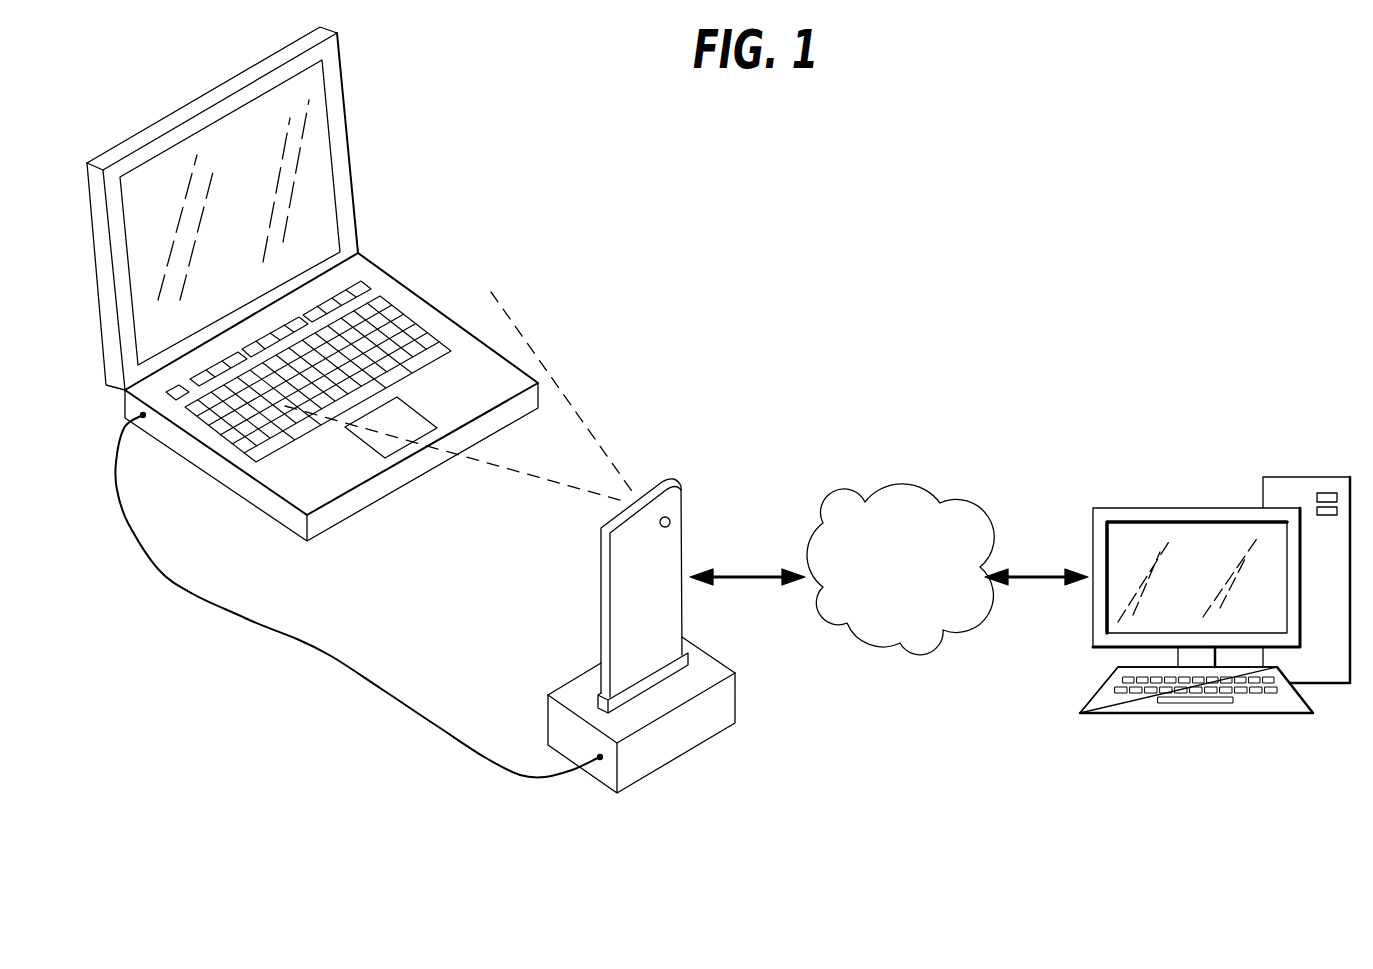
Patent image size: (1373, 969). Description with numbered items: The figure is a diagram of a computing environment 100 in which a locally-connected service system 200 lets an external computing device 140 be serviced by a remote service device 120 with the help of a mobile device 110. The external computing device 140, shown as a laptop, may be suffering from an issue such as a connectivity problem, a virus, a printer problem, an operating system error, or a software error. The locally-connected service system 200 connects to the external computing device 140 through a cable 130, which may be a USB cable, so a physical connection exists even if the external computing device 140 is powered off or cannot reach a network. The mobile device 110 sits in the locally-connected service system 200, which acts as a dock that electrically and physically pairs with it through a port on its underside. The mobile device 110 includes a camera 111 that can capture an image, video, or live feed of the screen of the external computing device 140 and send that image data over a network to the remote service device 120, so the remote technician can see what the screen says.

The computing environment 100 is at (1210, 98).
The mobile device 110 is at (601, 578).
The camera 111 is at (670, 525).
The remote service device 120 is at (1093, 528).
The cable 130 is at (329, 654).
The external computing device 140 is at (357, 170).
The locally-connected service system 200 is at (735, 698).